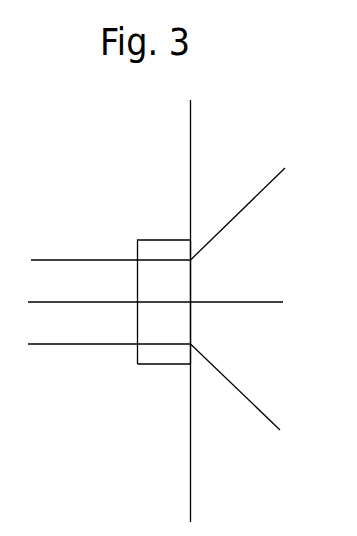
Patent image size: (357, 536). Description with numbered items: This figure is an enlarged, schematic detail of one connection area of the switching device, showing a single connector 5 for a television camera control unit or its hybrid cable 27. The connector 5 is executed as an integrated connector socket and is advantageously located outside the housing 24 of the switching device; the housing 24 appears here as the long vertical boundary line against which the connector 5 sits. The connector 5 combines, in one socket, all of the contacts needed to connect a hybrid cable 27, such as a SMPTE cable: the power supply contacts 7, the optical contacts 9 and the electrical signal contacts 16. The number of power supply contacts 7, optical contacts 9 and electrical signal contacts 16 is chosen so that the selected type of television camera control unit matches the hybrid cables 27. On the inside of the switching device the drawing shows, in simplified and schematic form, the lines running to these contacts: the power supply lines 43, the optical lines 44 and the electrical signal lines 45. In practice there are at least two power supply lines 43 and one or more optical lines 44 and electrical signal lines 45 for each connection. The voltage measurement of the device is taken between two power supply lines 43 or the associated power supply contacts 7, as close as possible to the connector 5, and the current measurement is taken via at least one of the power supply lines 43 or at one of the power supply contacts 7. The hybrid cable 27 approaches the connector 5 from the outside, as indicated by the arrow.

The connector 5 is at (171, 240).
The power supply contact 7 is at (190, 344).
The optical contact 9 is at (190, 302).
The electrical signal contact 16 is at (190, 260).
The housing 24 is at (189, 449).
The hybrid cable 27 is at (72, 345).
The power supply line 43 is at (258, 405).
The optical line 44 is at (252, 303).
The electrical signal line 45 is at (257, 195).